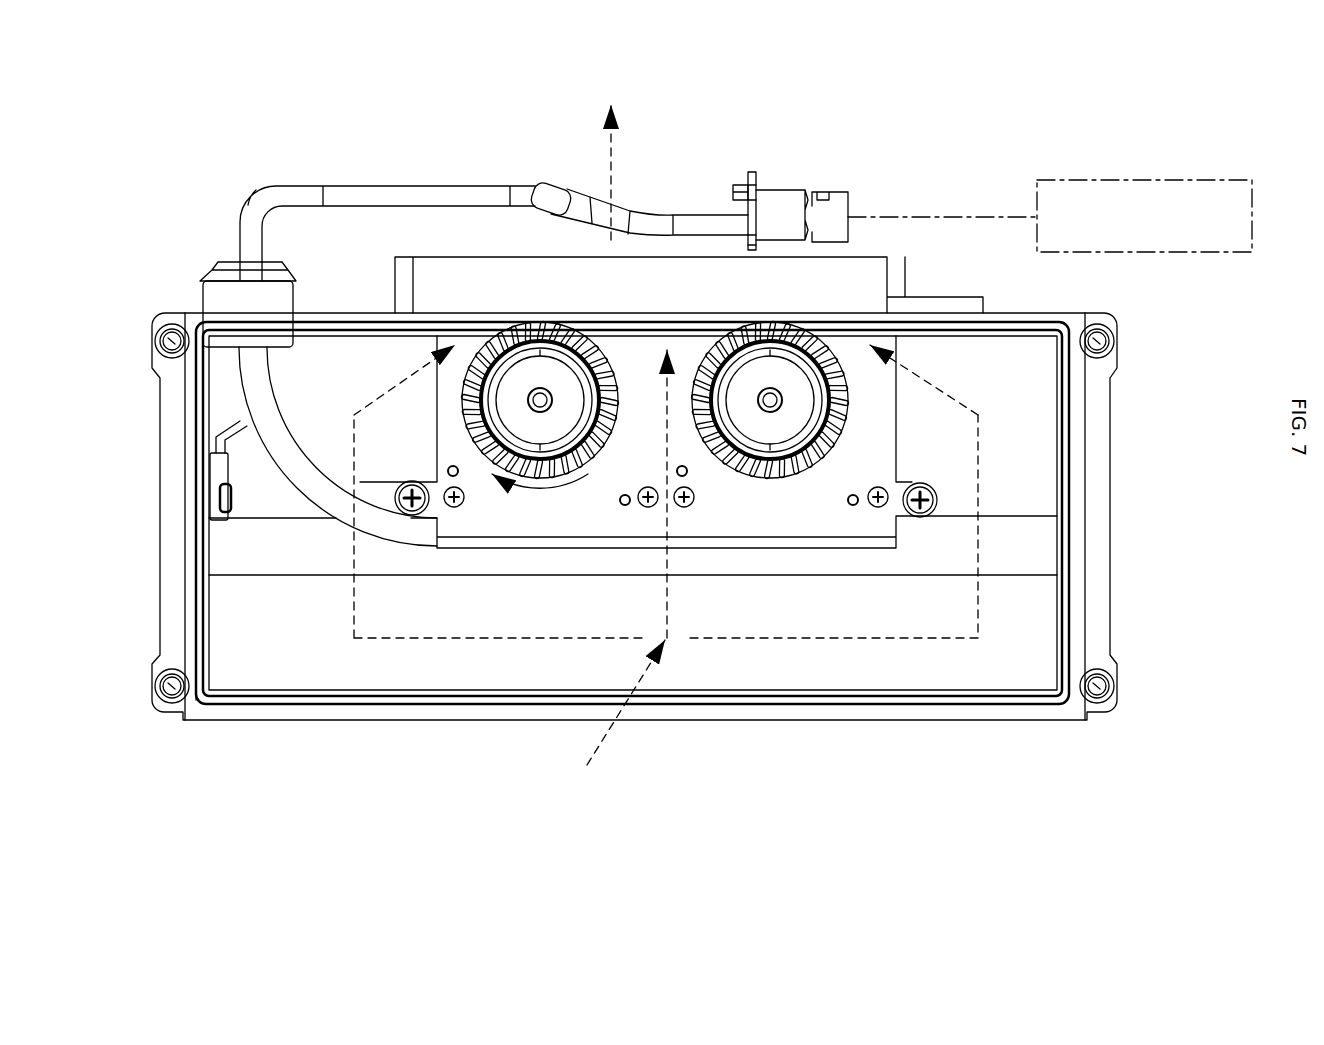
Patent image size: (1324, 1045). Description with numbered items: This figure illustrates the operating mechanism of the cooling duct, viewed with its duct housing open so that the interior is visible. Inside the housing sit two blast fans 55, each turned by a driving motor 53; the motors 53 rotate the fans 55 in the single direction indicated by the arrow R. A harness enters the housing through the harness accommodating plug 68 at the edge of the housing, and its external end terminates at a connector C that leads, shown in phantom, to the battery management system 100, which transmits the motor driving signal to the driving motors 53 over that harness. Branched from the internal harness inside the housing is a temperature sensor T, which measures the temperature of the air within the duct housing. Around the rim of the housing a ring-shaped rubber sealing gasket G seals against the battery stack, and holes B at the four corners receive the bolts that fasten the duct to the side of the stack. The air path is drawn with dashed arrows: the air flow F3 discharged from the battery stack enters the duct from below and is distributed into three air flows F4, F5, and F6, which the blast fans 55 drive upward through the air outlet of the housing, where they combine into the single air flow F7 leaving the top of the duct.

The holes B is at (172, 341).
The blast fans 55 is at (504, 330).
The driving motors 53 is at (785, 418).
The arrow R is at (540, 494).
The harness accommodating plug 68 is at (237, 268).
The connector C is at (783, 205).
The battery management system 100 is at (1137, 180).
The temperature sensor T is at (215, 468).
The sealing gasket G is at (205, 628).
The air flow F7 is at (627, 172).
The air flow F4 is at (499, 492).
The air flow F6 is at (834, 492).
The air flow F5 is at (684, 494).
The air flow F3 is at (626, 703).